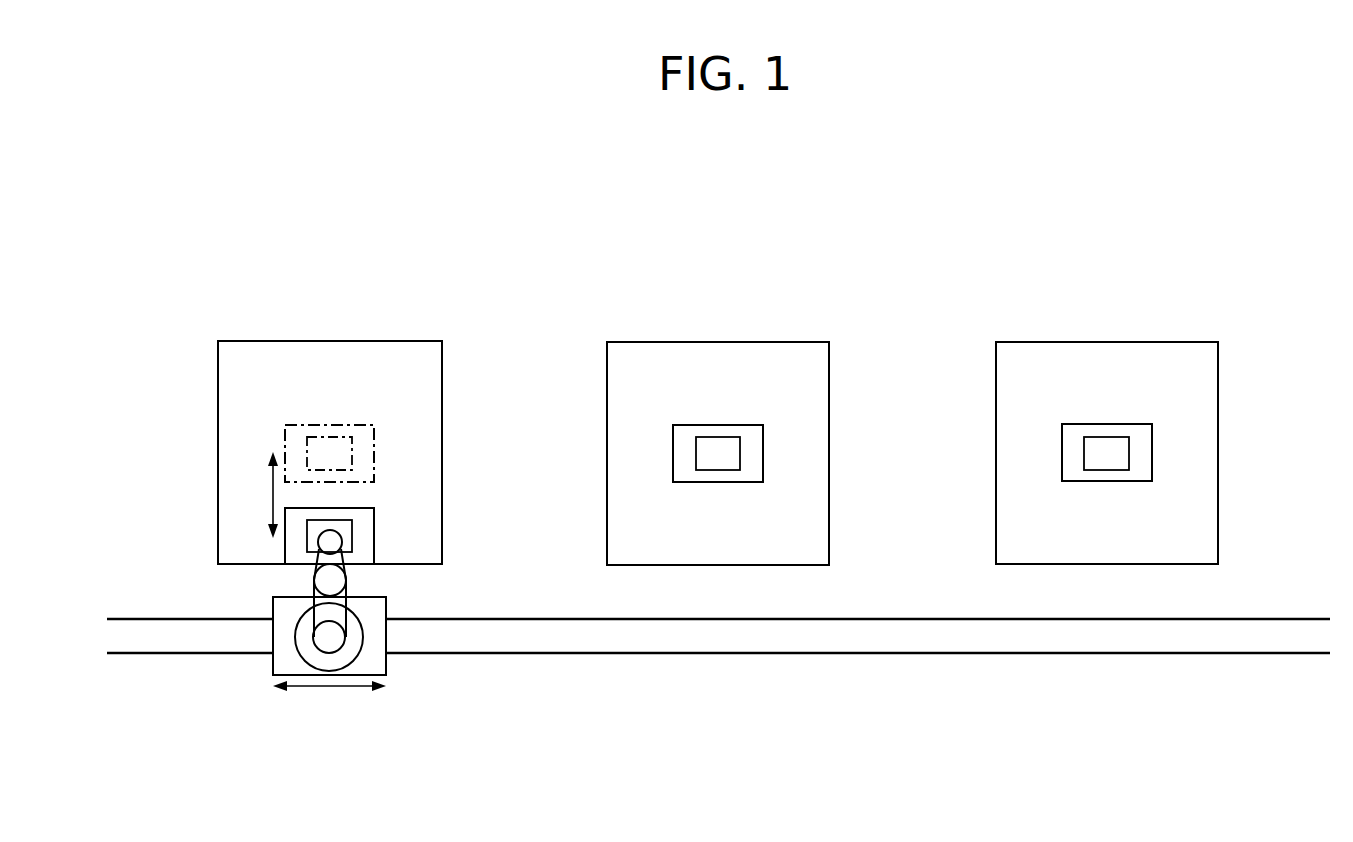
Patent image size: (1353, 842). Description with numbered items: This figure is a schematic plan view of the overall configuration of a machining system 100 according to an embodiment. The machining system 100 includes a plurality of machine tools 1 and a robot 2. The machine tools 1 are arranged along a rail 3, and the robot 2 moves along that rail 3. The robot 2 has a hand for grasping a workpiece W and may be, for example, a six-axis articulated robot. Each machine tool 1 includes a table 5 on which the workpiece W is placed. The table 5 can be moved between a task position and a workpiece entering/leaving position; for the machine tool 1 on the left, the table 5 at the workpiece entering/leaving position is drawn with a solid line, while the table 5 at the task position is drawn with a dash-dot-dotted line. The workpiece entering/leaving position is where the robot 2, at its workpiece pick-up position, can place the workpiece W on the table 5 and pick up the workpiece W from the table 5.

The machining system 100 is at (190, 240).
The machine tool 1 is at (296, 341).
The robot 2 is at (366, 656).
The rail 3 is at (768, 654).
The table 5 is at (374, 450).
The workpiece W is at (328, 437).